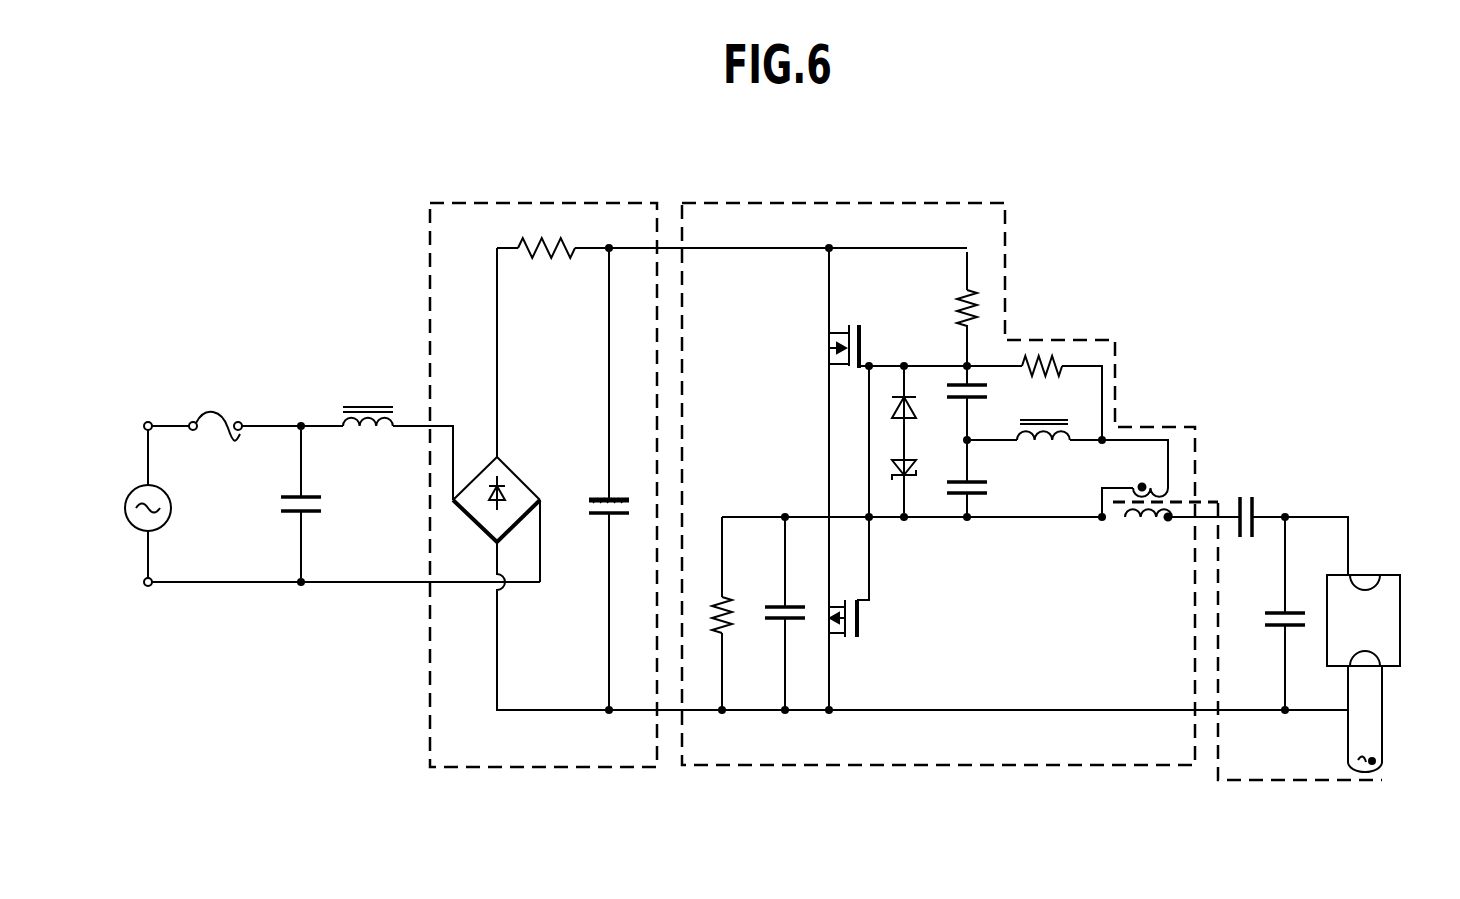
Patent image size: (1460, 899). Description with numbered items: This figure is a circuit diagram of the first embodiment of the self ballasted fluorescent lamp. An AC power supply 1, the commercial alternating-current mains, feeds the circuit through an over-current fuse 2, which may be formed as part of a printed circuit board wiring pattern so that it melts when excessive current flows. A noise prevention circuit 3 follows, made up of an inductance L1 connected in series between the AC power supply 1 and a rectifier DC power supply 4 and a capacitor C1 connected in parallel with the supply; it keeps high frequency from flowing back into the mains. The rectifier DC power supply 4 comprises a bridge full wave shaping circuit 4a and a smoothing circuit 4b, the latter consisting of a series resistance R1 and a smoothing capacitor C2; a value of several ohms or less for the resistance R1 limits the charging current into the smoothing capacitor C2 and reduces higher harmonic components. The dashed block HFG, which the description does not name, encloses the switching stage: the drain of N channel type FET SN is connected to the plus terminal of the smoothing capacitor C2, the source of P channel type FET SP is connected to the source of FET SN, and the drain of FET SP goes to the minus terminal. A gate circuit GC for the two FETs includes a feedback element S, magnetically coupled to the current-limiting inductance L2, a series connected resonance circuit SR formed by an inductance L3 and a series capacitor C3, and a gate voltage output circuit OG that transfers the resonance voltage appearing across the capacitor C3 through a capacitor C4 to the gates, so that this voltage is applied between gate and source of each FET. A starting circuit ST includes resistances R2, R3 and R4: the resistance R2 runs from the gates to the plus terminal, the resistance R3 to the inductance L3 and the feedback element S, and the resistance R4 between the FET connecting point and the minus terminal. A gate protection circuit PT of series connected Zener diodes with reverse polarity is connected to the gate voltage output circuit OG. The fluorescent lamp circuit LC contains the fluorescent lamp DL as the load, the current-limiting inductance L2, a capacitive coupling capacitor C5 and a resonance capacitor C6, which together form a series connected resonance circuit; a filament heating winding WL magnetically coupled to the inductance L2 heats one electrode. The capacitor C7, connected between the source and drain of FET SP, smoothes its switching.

The AC power supply 1 is at (172, 508).
The over-current fuse 2 is at (208, 412).
The noise prevention circuit 3 is at (320, 440).
The rectifier DC power supply 4 is at (458, 203).
The bridge full wave shaping circuit 4a is at (467, 527).
The smoothing circuit 4b is at (588, 278).
The inductance L1 is at (387, 380).
The capacitor C1 is at (323, 504).
The series resistance R1 is at (545, 262).
The smoothing capacitor C2 is at (586, 506).
The high-frequency generator HFG is at (703, 767).
The N channel type FET SN is at (838, 330).
The P channel type FET SP is at (836, 640).
The starting circuit ST is at (987, 263).
The gate voltage output circuit OG is at (980, 377).
The resistance R2 is at (958, 302).
The gate protection circuit PT is at (930, 347).
The resistance R3 is at (1050, 352).
The inductance L3 is at (1053, 417).
The capacitor C4 is at (948, 392).
The capacitor C3 is at (990, 487).
The series connected resonance circuit SR is at (970, 455).
The gate circuit GC is at (1100, 467).
The feedback element S is at (1152, 487).
The fluorescent lamp circuit LC is at (1114, 522).
The current-limiting inductance L2 is at (1172, 502).
The capacitive coupling capacitor C5 is at (1246, 540).
The resonance capacitor C6 is at (1262, 620).
The capacitor C7 is at (760, 607).
The resistance R4 is at (731, 622).
The fluorescent lamp DL is at (1400, 636).
The filament heating winding WL is at (1382, 740).